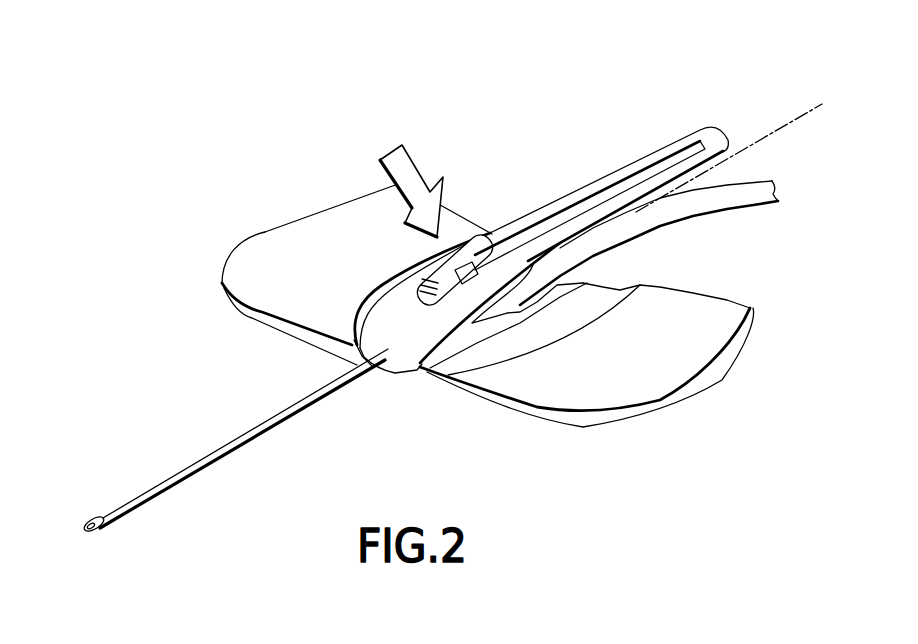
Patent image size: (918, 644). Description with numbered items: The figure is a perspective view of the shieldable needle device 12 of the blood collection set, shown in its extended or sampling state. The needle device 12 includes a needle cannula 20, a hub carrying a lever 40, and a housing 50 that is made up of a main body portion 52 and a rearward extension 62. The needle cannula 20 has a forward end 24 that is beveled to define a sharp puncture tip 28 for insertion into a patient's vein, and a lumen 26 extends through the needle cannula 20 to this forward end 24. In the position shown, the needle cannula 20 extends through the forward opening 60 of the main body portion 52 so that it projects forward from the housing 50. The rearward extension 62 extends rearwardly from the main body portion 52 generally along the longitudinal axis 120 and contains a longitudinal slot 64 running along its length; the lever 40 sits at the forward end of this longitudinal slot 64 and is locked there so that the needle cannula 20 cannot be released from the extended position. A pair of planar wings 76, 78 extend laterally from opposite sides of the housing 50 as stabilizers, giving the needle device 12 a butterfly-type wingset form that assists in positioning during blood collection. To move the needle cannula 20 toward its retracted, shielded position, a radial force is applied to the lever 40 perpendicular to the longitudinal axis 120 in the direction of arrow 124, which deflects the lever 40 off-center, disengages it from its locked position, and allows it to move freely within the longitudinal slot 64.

The shieldable needle device 12 is at (426, 60).
The needle cannula 20 is at (223, 452).
The forward end 24 is at (120, 540).
The lumen 26 is at (90, 522).
The puncture tip 28 is at (84, 530).
The lever 40 is at (473, 237).
The housing 50 is at (352, 160).
The main body portion 52 is at (352, 352).
The forward opening 60 is at (390, 352).
The rearward extension 62 is at (653, 158).
The longitudinal slot 64 is at (690, 144).
The planar wing 76 is at (672, 363).
The planar wing 78 is at (275, 242).
The longitudinal axis 120 is at (783, 122).
The arrow 124 is at (409, 165).